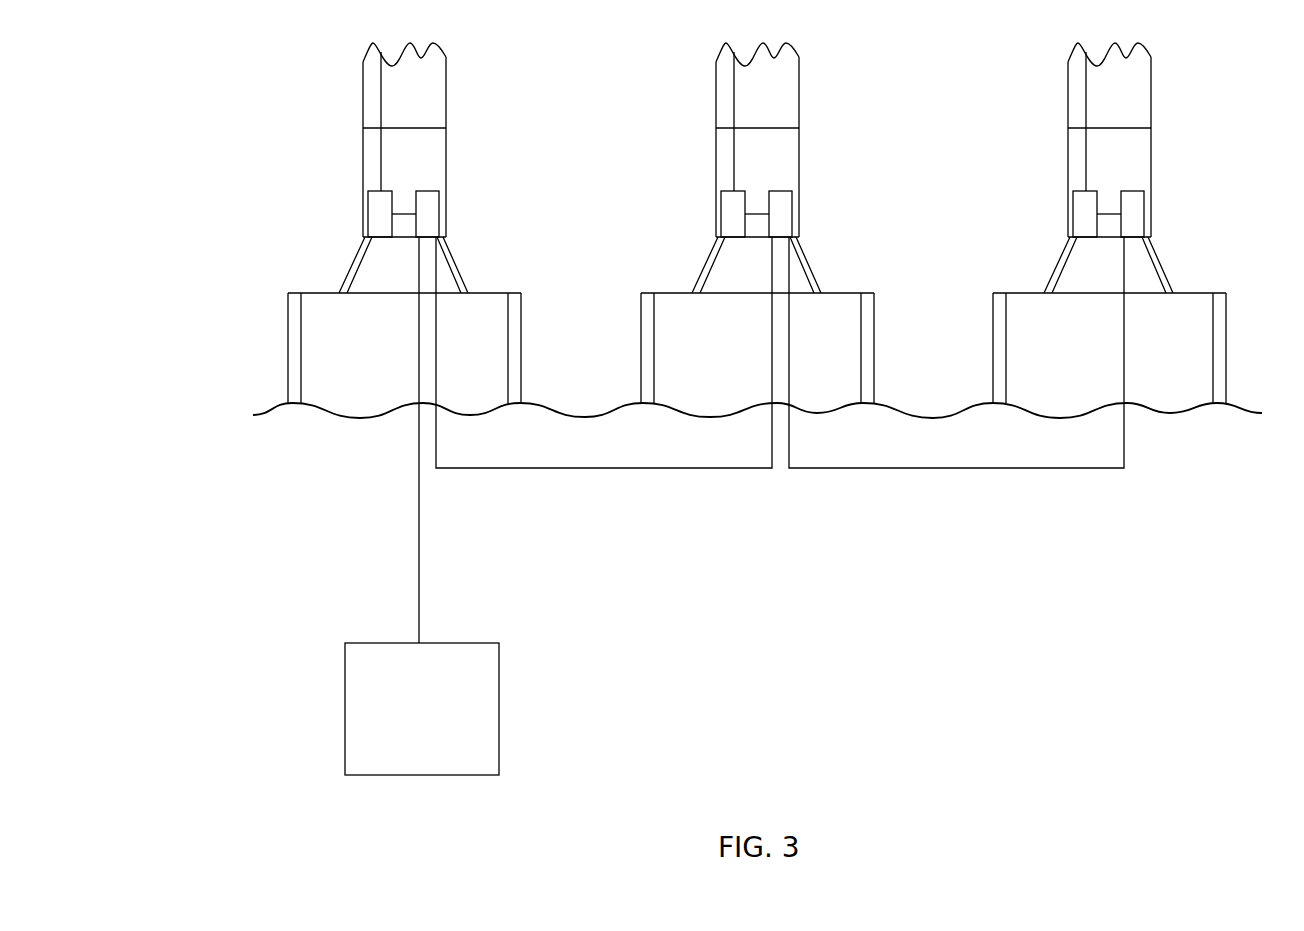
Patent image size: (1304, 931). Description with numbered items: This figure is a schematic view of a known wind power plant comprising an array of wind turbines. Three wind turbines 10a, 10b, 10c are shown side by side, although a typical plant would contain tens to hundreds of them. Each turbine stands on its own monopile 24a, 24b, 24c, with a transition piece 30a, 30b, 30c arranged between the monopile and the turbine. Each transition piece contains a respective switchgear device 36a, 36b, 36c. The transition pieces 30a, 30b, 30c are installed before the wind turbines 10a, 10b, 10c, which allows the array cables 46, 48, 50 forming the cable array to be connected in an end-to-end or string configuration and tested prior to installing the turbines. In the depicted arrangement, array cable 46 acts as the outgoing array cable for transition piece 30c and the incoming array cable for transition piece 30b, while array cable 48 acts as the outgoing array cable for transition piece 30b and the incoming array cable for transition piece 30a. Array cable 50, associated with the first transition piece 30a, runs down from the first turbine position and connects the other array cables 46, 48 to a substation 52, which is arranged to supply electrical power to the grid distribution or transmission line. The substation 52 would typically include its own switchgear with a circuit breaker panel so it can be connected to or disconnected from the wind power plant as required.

The wind turbine 10a is at (344, 85).
The wind turbine 10b is at (697, 77).
The wind turbine 10c is at (1047, 77).
The transition piece 30a is at (336, 209).
The transition piece 30b is at (693, 213).
The transition piece 30c is at (1044, 213).
The switchgear device 36a is at (440, 197).
The switchgear device 36b is at (793, 197).
The switchgear device 36c is at (1145, 197).
The monopile 24a is at (257, 358).
The monopile 24b is at (628, 355).
The monopile 24c is at (978, 361).
The array cable 46 is at (892, 468).
The array cable 48 is at (632, 470).
The array cable 50 is at (418, 505).
The substation 52 is at (422, 709).